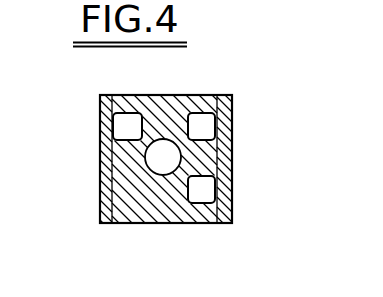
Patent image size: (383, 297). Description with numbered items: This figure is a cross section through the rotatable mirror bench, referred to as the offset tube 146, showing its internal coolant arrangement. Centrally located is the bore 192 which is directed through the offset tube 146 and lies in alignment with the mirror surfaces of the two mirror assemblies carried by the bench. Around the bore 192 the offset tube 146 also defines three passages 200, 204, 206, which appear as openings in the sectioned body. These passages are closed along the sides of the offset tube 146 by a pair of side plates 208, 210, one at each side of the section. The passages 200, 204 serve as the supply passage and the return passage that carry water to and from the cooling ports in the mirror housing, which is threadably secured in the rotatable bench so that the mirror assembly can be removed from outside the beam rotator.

The offset tube 146 is at (152, 222).
The bore 192 is at (163, 147).
The passage 200 is at (127, 113).
The passage 204 is at (206, 122).
The passage 206 is at (203, 193).
The side plate 208 is at (110, 193).
The side plate 210 is at (224, 146).